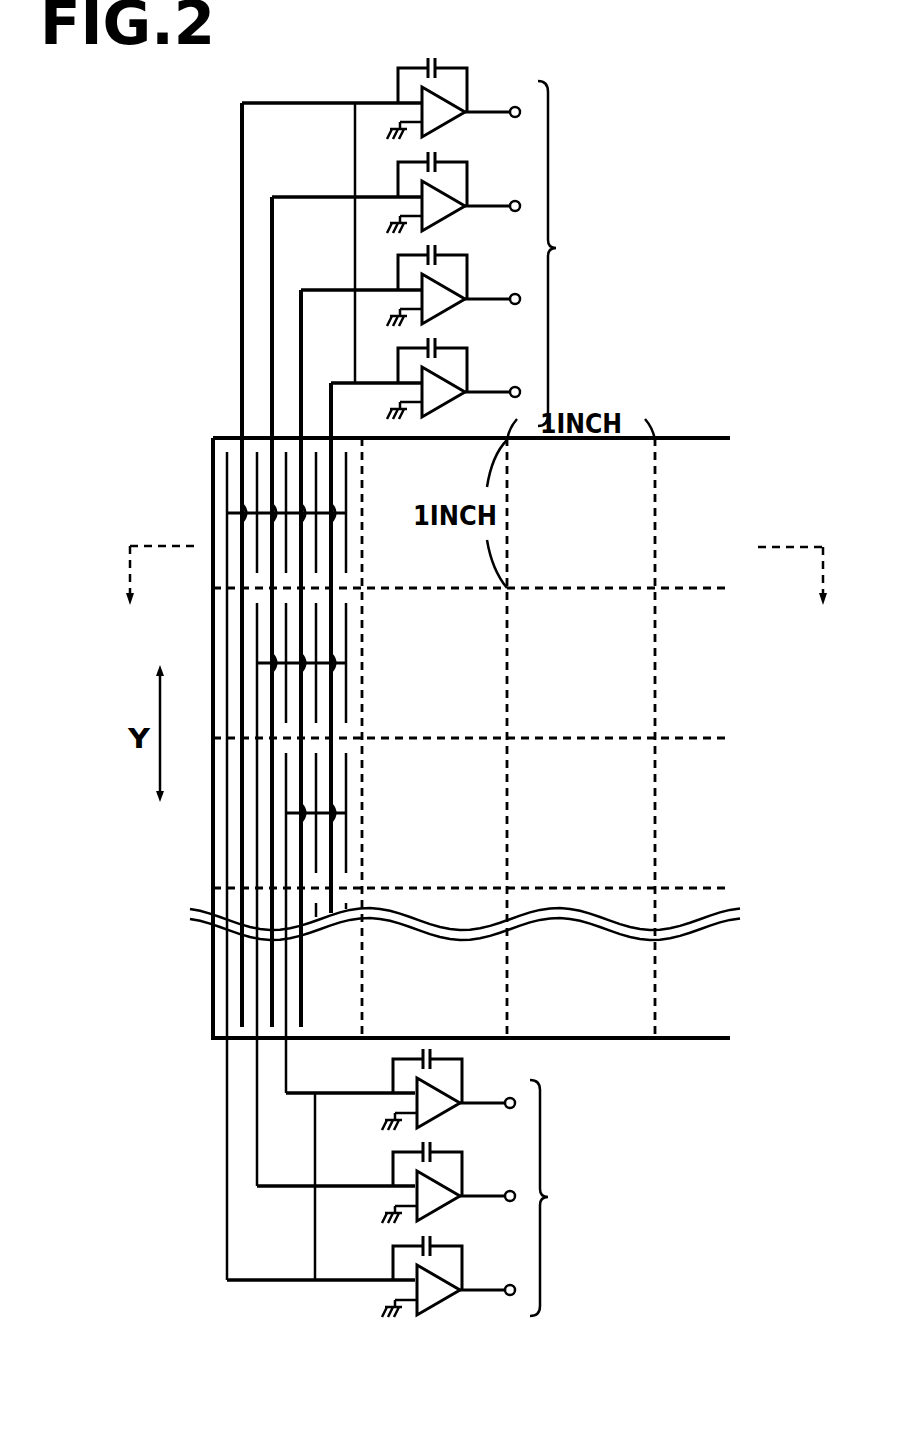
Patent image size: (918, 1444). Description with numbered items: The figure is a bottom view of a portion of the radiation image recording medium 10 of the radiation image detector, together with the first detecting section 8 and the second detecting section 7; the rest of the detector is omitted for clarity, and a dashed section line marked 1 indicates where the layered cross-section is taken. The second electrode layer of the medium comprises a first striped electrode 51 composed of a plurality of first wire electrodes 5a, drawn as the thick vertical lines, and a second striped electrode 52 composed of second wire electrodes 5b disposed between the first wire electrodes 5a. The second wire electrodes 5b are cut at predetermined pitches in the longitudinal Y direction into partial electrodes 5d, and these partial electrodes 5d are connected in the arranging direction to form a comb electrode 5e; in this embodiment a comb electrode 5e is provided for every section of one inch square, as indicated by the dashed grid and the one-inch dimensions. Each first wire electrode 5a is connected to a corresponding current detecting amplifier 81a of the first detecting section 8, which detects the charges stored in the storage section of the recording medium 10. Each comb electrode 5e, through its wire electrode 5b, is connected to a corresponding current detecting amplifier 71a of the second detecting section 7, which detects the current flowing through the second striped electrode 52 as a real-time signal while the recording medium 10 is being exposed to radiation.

The first electrode layer 1 is at (479, 570).
The first wire electrodes 5a is at (243, 140).
The second wire electrodes 5b is at (286, 1085).
The partial electrodes 5d is at (346, 568).
The comb electrode 5e is at (346, 510).
The second detecting section 7 is at (551, 1198).
The first detecting section 8 is at (557, 253).
The radiation image recording medium 10 is at (703, 432).
The first striped electrode 51 is at (355, 254).
The second striped electrode 52 is at (315, 1150).
The current detecting amplifier 71a is at (438, 1110).
The current detecting amplifier 81a is at (443, 119).